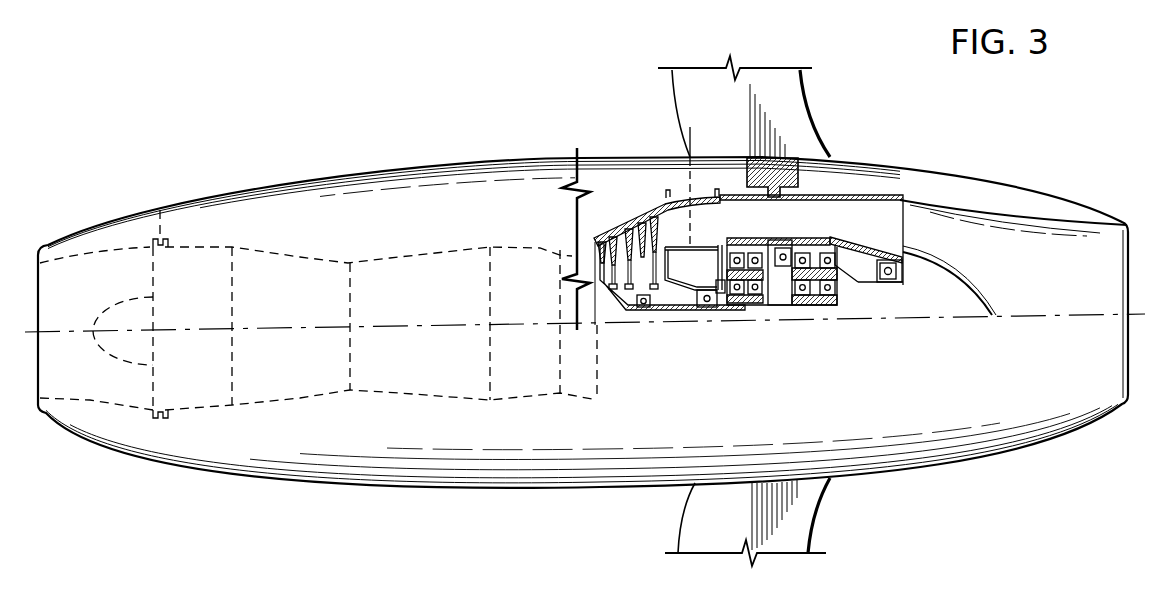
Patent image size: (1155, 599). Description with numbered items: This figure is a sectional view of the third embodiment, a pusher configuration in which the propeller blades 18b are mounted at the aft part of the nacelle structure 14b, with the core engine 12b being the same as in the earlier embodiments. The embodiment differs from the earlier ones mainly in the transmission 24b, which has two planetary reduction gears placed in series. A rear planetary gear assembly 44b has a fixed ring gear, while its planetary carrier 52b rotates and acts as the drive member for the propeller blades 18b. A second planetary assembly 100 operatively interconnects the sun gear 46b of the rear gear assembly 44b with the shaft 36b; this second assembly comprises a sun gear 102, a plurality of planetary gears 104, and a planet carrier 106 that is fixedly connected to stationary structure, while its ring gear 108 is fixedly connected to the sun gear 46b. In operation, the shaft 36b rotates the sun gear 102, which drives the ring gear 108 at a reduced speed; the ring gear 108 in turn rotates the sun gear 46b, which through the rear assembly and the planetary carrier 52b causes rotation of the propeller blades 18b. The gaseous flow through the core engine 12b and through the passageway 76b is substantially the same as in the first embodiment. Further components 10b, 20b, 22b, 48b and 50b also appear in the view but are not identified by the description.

The nacelle 10b is at (457, 150).
The nacelle structure 14b is at (278, 182).
The fan casing outline 20b is at (160, 210).
The core engine 12b is at (392, 257).
The propeller blades 18b is at (678, 84).
The shaft centerline 22b is at (690, 133).
The planetary gears 104 is at (719, 280).
The second planetary assembly 100 is at (760, 228).
The ring gear 108 is at (778, 239).
The passageway 76b is at (835, 226).
The rotor housing top wall 48b is at (825, 240).
The rear planetary gear assembly 44b is at (850, 196).
The shaft 36b is at (665, 313).
The planet carrier 106 is at (688, 310).
The sun gear 102 is at (735, 308).
The transmission 24b is at (795, 316).
The sun gear 46b is at (817, 308).
The bearing block 50b is at (830, 306).
The planetary carrier 52b is at (860, 300).